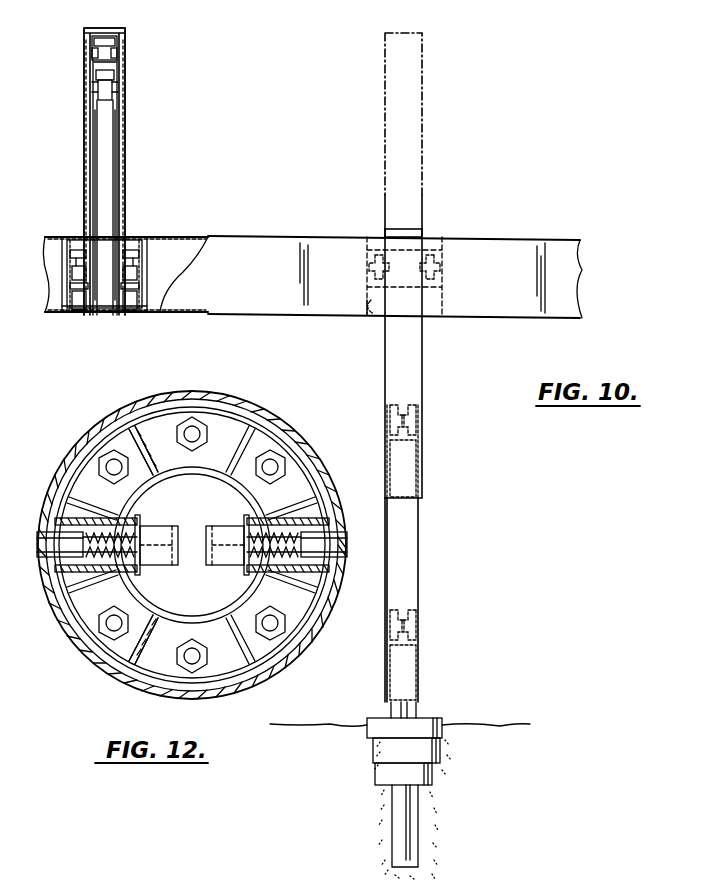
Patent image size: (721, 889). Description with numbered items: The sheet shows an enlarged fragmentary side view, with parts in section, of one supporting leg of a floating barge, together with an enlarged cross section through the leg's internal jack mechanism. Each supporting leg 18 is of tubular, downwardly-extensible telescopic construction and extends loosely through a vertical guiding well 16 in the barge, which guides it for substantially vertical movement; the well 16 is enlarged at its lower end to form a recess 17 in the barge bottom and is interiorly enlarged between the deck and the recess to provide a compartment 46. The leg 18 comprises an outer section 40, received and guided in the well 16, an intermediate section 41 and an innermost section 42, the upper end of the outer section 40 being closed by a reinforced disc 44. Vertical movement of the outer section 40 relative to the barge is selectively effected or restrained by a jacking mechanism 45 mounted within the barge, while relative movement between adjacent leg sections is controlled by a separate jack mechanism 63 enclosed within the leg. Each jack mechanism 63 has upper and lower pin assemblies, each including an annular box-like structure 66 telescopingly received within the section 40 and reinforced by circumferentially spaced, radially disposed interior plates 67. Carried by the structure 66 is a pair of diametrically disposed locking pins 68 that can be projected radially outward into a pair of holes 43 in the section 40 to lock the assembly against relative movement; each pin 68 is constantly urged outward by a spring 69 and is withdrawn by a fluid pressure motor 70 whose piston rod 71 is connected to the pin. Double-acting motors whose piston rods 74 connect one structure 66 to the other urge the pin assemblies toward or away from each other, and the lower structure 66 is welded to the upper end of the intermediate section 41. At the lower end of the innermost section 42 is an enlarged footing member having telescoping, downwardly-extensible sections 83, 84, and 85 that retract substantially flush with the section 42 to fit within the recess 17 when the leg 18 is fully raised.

In FIG. 10, the guiding well 16 is at (118, 237).
In FIG. 10, the recess 17 is at (372, 318).
In FIG. 10, the supporting leg 18 is at (86, 140).
In FIG. 10, the outer section 40 is at (120, 107).
In FIG. 12, the outer section 40 is at (238, 407).
In FIG. 10, the intermediate section 41 is at (118, 140).
In FIG. 10, the innermost section 42 is at (118, 170).
In FIG. 12, the holes 43 is at (30, 530).
In FIG. 10, the reinforced disc 44 is at (110, 30).
In FIG. 10, the jacking mechanism 45 is at (136, 280).
In FIG. 10, the compartment 46 is at (136, 263).
In FIG. 10, the jack mechanism 63 is at (422, 433).
In FIG. 12, the box-like structure 66 is at (288, 452).
In FIG. 12, the interior plates 67 is at (70, 620).
In FIG. 12, the locking pins 68 is at (40, 555).
In FIG. 12, the spring 69 is at (108, 532).
In FIG. 12, the fluid pressure motor 70 is at (225, 535).
In FIG. 12, the piston rod 71 is at (112, 556).
In FIG. 12, the piston rods 74 is at (194, 432).
In FIG. 10, the footing section 83 is at (68, 306).
In FIG. 10, the footing section 84 is at (420, 752).
In FIG. 10, the footing section 85 is at (78, 312).